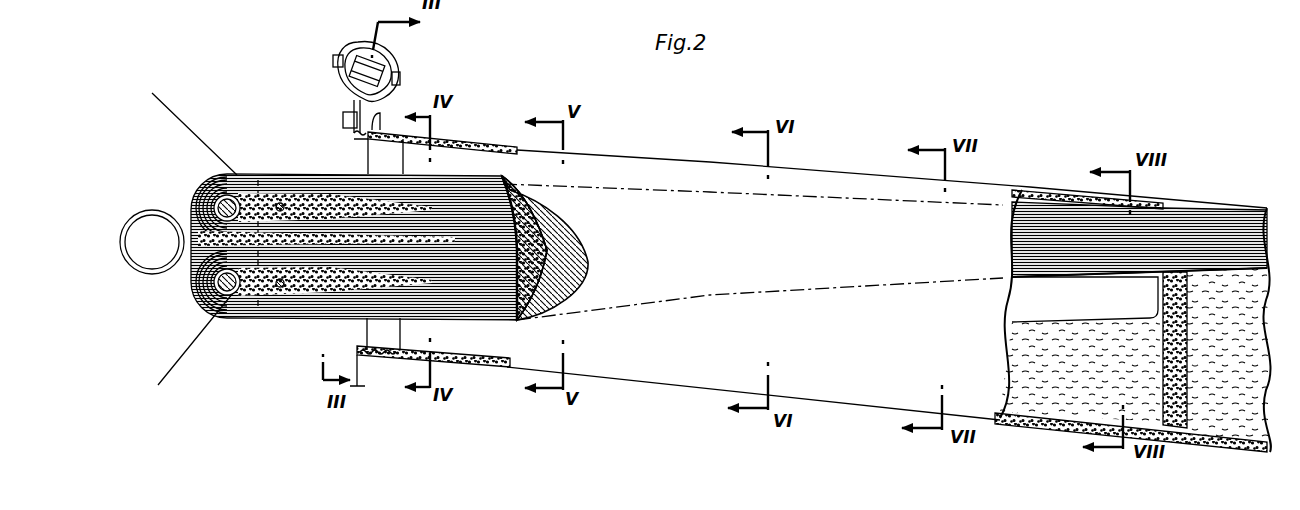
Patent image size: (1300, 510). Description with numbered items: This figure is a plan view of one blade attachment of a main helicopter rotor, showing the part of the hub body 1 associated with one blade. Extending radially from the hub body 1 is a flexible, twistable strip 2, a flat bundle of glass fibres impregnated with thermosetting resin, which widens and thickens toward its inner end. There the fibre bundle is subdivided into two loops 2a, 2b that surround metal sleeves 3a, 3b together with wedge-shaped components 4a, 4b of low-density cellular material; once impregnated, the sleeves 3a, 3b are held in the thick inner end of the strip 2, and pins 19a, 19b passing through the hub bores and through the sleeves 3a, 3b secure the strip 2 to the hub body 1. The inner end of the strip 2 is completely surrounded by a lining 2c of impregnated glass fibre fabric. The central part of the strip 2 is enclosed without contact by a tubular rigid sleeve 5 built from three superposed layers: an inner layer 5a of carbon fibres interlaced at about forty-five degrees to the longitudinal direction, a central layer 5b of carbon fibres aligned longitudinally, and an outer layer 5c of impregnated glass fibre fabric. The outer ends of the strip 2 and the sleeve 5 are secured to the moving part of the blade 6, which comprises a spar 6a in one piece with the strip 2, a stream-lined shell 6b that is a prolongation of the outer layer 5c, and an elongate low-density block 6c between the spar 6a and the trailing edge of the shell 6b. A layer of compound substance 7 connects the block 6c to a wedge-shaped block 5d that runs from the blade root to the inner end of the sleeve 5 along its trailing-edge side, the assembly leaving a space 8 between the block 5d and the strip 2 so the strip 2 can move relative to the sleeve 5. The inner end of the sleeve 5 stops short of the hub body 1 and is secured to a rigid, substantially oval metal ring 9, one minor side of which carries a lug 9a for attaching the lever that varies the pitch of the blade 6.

The hub body 1 is at (158, 132).
The flexible twistable strip 2 is at (1042, 238).
The loop 2a is at (212, 290).
The loop 2b is at (210, 203).
The lining 2c is at (262, 318).
The metal sleeve 3a is at (233, 297).
The metal sleeve 3b is at (238, 196).
The wedge-shaped component 4a is at (305, 280).
The wedge-shaped component 4b is at (298, 192).
The tubular rigid sleeve 5 is at (824, 167).
The inner layer 5a is at (540, 212).
The central layer 5b is at (566, 213).
The outer layer 5c is at (614, 220).
The block 5d is at (1030, 388).
The blade 6 is at (1218, 347).
The spar 6a is at (1220, 240).
The stream-lined shell 6b is at (1220, 443).
The elongate block 6c is at (1237, 375).
The layer of compound substance 7 is at (1167, 370).
The space 8 is at (1085, 299).
The rigid ring 9 is at (388, 130).
The lug 9a is at (397, 60).
The pin 19a is at (212, 282).
The pin 19b is at (230, 197).